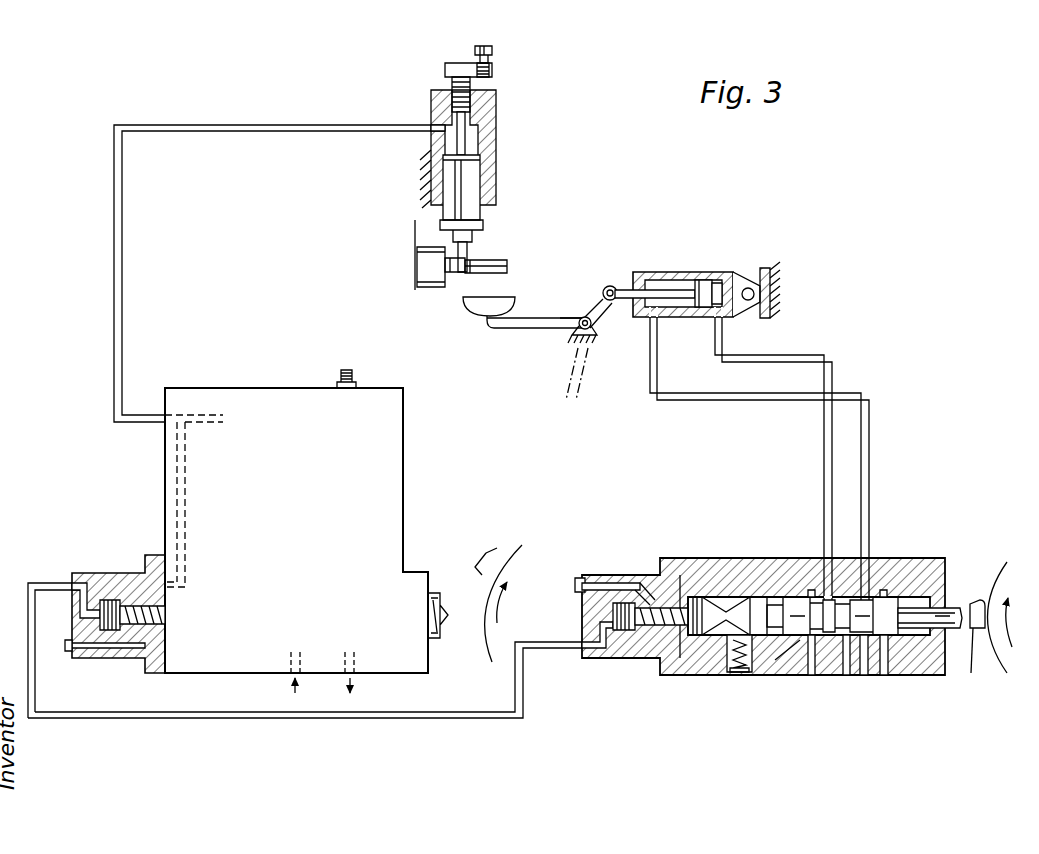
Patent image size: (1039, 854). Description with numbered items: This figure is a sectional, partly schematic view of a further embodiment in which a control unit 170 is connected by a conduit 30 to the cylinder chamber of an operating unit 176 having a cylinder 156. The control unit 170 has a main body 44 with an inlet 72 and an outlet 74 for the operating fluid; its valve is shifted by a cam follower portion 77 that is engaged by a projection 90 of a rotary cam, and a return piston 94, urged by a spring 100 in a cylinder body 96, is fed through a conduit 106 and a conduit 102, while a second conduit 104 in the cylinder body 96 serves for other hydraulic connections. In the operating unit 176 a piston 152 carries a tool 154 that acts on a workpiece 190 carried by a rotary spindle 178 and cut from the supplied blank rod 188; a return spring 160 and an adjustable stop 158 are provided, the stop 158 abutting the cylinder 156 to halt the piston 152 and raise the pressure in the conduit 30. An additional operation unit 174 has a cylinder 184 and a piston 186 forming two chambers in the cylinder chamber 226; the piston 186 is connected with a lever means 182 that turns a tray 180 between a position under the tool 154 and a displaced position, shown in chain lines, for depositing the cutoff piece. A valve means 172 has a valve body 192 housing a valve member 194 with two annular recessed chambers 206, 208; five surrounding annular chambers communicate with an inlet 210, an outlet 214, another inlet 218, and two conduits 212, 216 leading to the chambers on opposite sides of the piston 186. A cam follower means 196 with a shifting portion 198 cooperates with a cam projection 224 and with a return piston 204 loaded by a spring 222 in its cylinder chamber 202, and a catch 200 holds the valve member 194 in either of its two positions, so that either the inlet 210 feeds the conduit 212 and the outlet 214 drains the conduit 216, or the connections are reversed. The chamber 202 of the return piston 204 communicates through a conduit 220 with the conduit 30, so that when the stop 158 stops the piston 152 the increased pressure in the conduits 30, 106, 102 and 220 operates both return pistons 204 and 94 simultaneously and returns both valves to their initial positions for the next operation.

The conduit 30 is at (118, 275).
The main body 44 is at (238, 398).
The inlet 72 is at (300, 675).
The outlet 74 is at (356, 675).
The cam follower portion 77 is at (445, 612).
The cam projection 90 is at (478, 555).
The return piston 94 is at (115, 608).
The cylinder body 96 is at (70, 595).
The spring 100 is at (145, 625).
The conduit 102 is at (107, 580).
The second conduit 104 is at (87, 650).
The conduit 106 is at (177, 464).
The piston 152 is at (465, 196).
The tool 154 is at (463, 252).
The cylinder housing 156 is at (497, 140).
The adjustable stop 158 is at (492, 50).
The return spring 160 is at (452, 82).
The control unit 170 is at (296, 498).
The valve means 172 is at (788, 520).
The additional operation unit 174 is at (706, 288).
The operating unit 176 is at (473, 198).
The rotary spindle 178 is at (430, 287).
The tray 180 is at (480, 307).
The lever means 182 is at (530, 328).
The cylinder 184 is at (703, 290).
The piston 186 is at (717, 292).
The workpiece 188 is at (455, 272).
The workpiece 190 is at (507, 266).
The valve body 192 is at (905, 575).
The valve member 194 is at (823, 660).
The cam follower means 196 is at (980, 600).
The shifting portion 198 is at (700, 635).
The catch 200 is at (730, 668).
The inlet channel 202 is at (590, 590).
The return piston 204 is at (630, 628).
The annular recessed chamber 206 is at (825, 670).
The annular recessed chamber 208 is at (865, 660).
The inlet 210 is at (810, 662).
The conduit 212 is at (826, 530).
The outlet 214 is at (845, 660).
The conduit 216 is at (870, 530).
The another inlet 218 is at (882, 660).
The conduit 220 is at (210, 712).
The spring 222 is at (637, 600).
The cam projection 224 is at (988, 649).
The cylinder chamber 226 is at (673, 307).